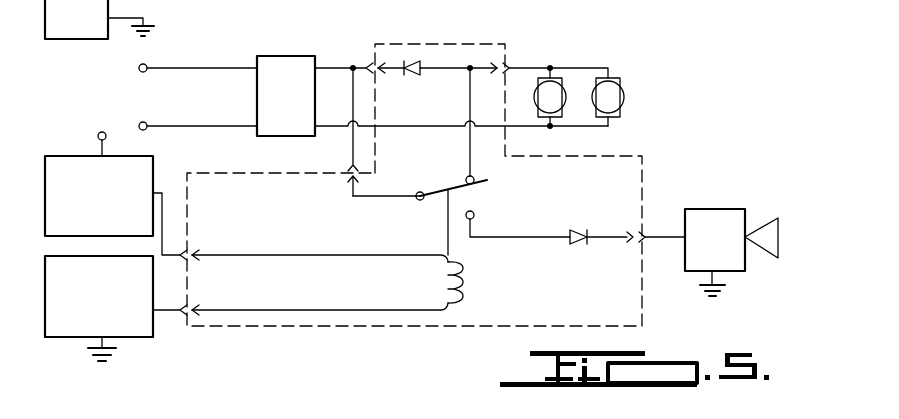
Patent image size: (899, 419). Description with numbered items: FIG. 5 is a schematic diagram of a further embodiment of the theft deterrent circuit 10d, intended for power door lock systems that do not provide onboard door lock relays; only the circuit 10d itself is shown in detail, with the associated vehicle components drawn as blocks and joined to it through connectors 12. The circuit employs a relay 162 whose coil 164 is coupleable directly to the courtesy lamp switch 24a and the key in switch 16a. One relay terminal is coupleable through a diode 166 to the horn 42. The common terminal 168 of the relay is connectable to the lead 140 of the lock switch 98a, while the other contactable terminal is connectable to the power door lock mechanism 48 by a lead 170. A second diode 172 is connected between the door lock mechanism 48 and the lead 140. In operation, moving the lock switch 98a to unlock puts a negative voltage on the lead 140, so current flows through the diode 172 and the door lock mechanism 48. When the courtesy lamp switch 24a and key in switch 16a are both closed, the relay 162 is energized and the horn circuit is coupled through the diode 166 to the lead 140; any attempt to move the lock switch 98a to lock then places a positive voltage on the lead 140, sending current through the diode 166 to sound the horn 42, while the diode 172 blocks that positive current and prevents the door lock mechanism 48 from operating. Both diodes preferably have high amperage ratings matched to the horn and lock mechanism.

The circuit 10d is at (316, 236).
The connector 12 is at (387, 53).
The key in switch 16a is at (108, 8).
The courtesy lamp switch 24a is at (153, 162).
The alarm 42 is at (712, 228).
The power door lock mechanism 48 is at (596, 95).
The lock switch 98a is at (257, 92).
The lead 140 is at (328, 64).
The relay 162 is at (353, 250).
The coil 164 is at (462, 293).
The diode 166 is at (571, 229).
The common terminal 168 is at (418, 205).
The lead 170 is at (470, 96).
The second diode 172 is at (419, 62).